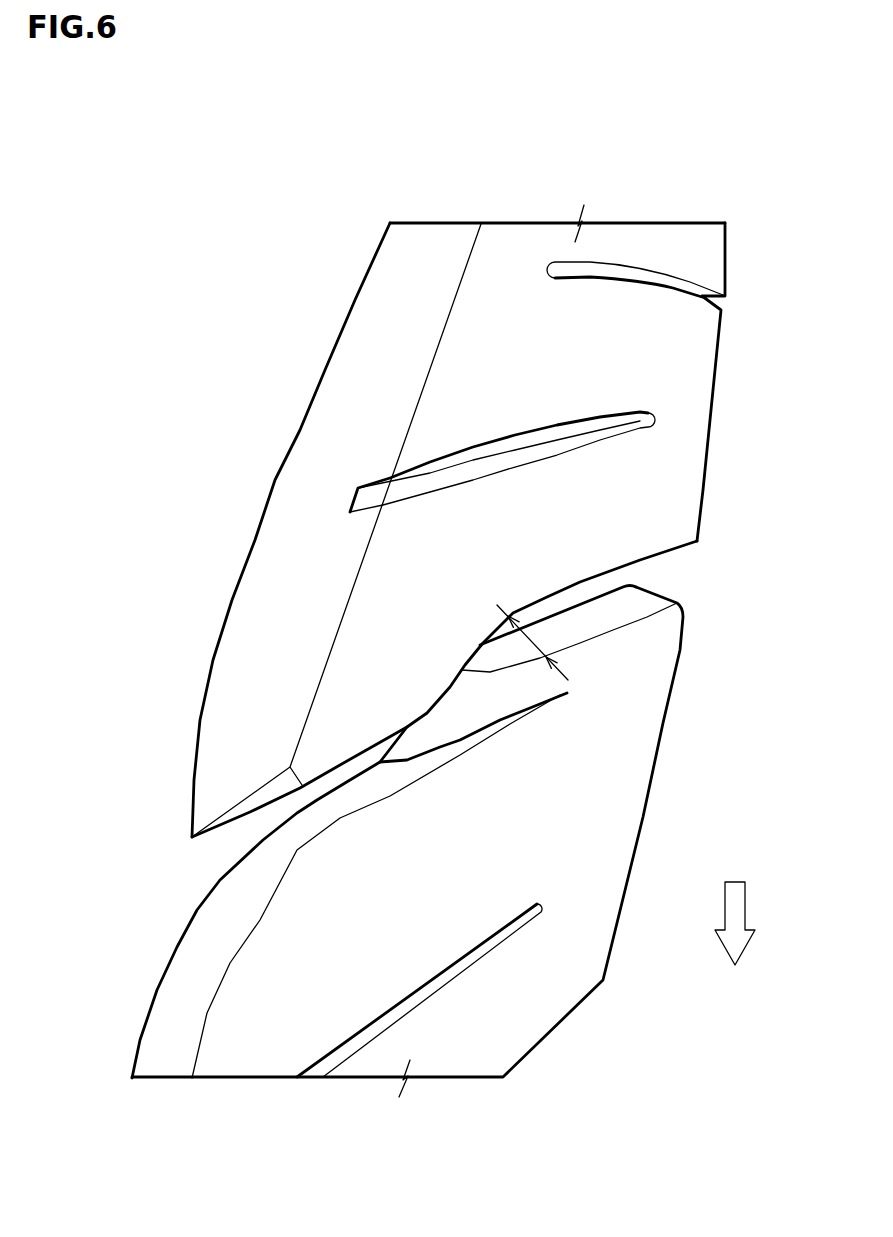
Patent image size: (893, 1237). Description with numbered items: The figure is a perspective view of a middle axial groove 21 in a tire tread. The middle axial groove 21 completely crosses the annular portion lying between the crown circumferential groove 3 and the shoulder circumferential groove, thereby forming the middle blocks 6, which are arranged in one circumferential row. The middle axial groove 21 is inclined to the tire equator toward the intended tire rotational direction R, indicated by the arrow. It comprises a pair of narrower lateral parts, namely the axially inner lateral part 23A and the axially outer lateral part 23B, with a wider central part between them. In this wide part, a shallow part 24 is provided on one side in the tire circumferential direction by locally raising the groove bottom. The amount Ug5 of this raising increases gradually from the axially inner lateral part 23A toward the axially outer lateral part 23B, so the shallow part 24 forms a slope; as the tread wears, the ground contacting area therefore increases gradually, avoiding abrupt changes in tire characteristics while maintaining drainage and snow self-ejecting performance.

The crown circumferential groove 3 is at (175, 565).
The middle block 6 is at (506, 552).
The middle axial groove 21 is at (683, 590).
The axially inner lateral part 23A is at (318, 788).
The axially outer lateral part 23B is at (567, 600).
The amount of raising Ug5 is at (530, 638).
The shallow part 24 is at (490, 704).
The intended tire rotational direction R is at (735, 909).